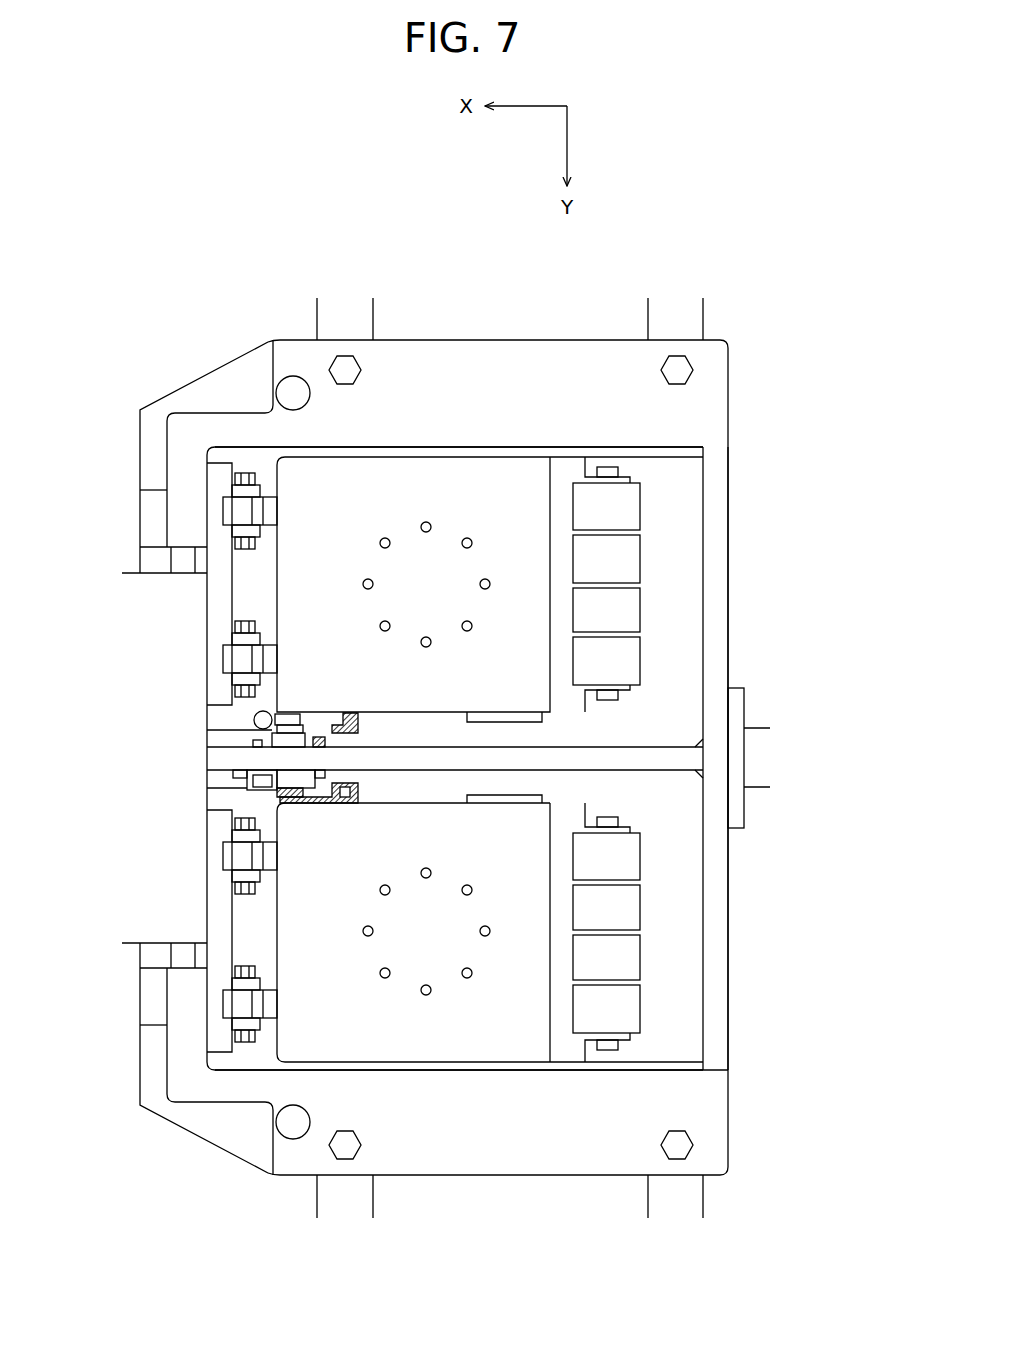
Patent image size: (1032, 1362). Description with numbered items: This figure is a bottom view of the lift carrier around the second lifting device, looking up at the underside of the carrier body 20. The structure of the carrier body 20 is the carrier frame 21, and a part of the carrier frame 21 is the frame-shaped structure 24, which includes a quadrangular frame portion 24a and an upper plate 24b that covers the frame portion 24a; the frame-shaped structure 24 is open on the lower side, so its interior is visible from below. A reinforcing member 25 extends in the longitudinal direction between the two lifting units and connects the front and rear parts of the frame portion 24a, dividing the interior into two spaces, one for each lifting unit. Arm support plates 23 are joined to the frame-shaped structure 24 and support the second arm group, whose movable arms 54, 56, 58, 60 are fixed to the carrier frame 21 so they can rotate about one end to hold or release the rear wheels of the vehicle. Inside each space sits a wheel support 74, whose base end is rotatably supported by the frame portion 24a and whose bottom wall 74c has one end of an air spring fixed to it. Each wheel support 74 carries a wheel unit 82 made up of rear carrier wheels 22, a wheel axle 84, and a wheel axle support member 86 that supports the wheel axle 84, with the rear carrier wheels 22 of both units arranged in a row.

The carrier body 20 is at (666, 210).
The carrier frame 21 is at (775, 757).
The rear carrier wheels 22 is at (641, 955).
The arm support plates 23 is at (510, 357).
The frame-shaped structure 24 is at (823, 497).
The frame portion 24a is at (713, 522).
The upper plate 24b is at (667, 537).
The reinforcing member 25 is at (640, 745).
The movable arm 54 is at (345, 313).
The movable arm 56 is at (347, 1210).
The movable arm 58 is at (673, 315).
The movable arm 60 is at (675, 1210).
The wheel support 74 is at (260, 594).
The bottom wall 74c is at (331, 487).
The wheel unit 82 is at (654, 613).
The wheel axle 84 is at (618, 1045).
The wheel axle support member 86 is at (577, 808).